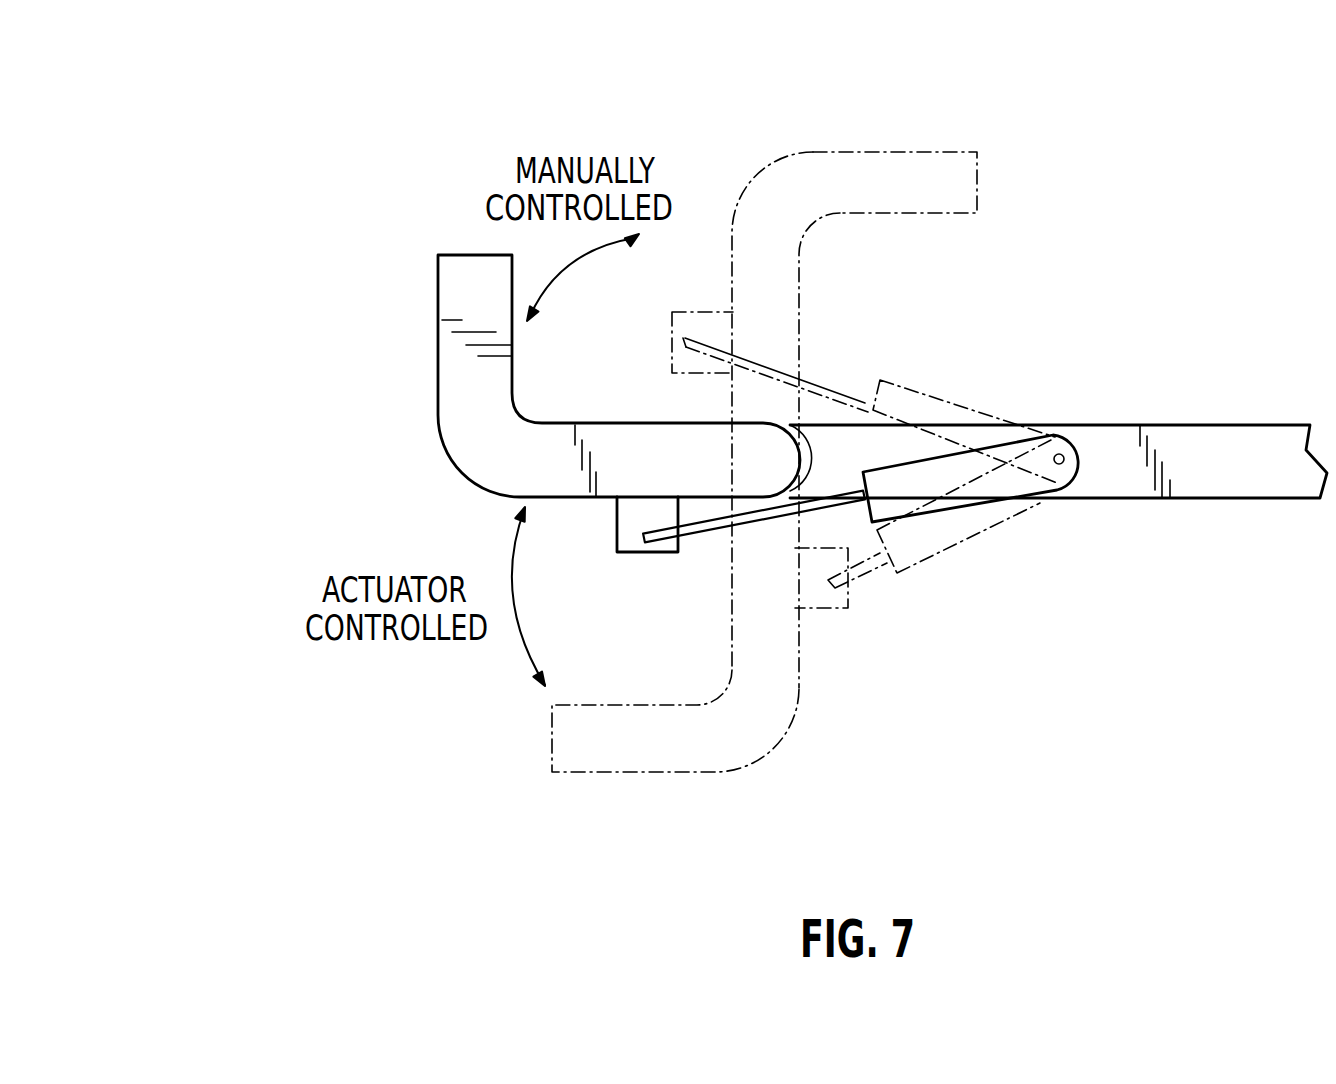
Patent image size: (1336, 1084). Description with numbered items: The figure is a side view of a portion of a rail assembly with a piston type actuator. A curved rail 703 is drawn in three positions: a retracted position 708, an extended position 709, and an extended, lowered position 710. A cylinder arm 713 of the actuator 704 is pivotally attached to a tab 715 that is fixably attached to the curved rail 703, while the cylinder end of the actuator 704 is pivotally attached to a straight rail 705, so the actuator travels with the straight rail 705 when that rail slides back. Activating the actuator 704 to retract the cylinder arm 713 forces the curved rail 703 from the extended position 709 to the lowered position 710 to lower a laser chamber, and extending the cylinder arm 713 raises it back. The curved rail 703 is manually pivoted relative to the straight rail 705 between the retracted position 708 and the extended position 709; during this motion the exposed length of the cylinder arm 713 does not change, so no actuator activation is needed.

The curved rail 703 is at (818, 420).
The actuator 704 is at (1002, 455).
The straight rail 705 is at (1263, 478).
The retracted position 708 is at (977, 178).
The extended position 709 is at (452, 422).
The lowered position 710 is at (668, 775).
The cylinder arm 713 is at (830, 493).
The tab 715 is at (642, 555).